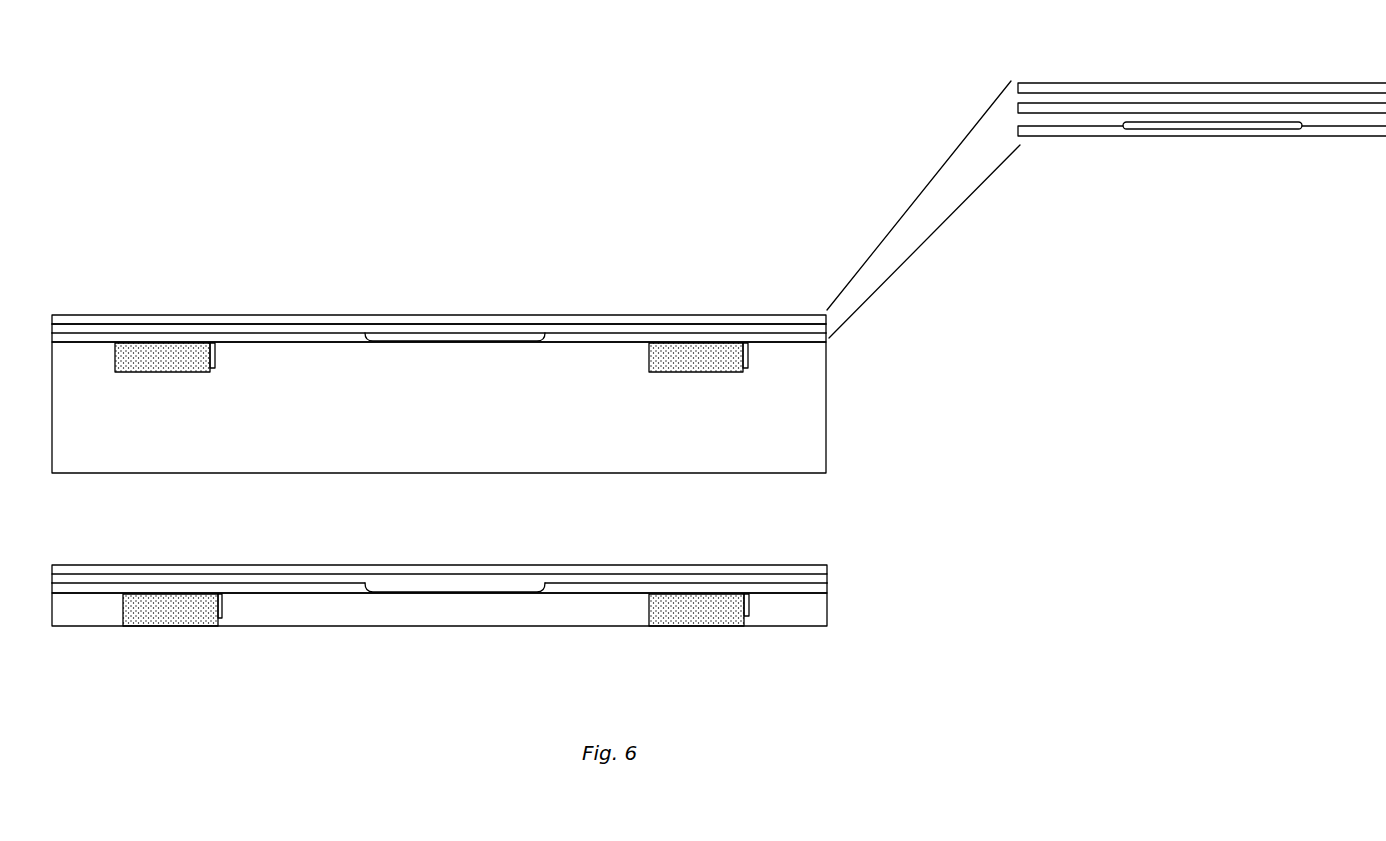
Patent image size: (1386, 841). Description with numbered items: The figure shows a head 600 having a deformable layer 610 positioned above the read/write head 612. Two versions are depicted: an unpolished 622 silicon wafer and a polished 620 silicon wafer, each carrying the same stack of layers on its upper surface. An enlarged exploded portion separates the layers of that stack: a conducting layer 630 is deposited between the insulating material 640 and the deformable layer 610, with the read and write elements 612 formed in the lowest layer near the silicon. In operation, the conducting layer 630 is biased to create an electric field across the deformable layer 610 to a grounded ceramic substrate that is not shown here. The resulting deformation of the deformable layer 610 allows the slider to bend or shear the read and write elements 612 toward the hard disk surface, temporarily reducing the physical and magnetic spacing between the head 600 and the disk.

The head 600 is at (719, 329).
The deformable layer 610 is at (230, 314).
The read/write head 612 is at (423, 341).
The polished silicon wafer 620 is at (826, 611).
The unpolished silicon wafer 622 is at (826, 406).
The conducting layer 630 is at (1172, 105).
The insulating material 640 is at (1077, 137).